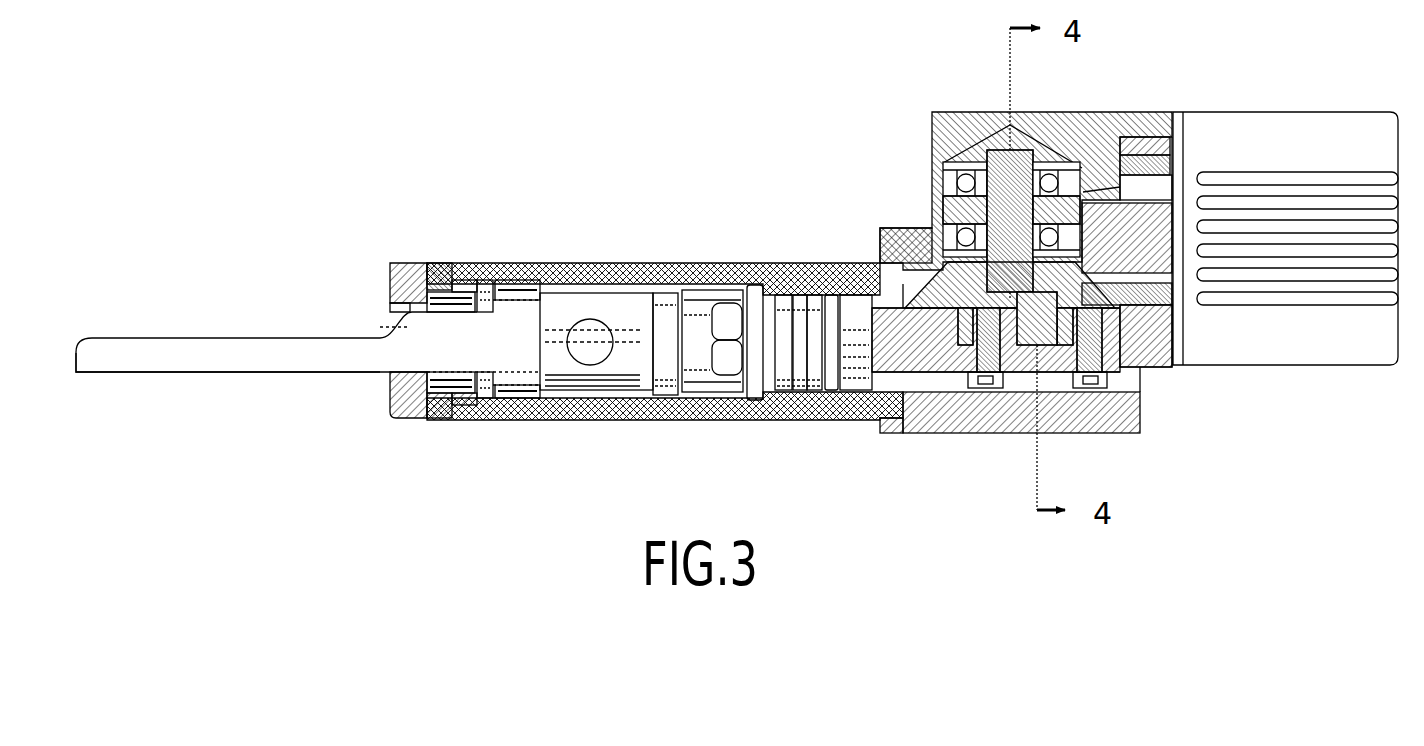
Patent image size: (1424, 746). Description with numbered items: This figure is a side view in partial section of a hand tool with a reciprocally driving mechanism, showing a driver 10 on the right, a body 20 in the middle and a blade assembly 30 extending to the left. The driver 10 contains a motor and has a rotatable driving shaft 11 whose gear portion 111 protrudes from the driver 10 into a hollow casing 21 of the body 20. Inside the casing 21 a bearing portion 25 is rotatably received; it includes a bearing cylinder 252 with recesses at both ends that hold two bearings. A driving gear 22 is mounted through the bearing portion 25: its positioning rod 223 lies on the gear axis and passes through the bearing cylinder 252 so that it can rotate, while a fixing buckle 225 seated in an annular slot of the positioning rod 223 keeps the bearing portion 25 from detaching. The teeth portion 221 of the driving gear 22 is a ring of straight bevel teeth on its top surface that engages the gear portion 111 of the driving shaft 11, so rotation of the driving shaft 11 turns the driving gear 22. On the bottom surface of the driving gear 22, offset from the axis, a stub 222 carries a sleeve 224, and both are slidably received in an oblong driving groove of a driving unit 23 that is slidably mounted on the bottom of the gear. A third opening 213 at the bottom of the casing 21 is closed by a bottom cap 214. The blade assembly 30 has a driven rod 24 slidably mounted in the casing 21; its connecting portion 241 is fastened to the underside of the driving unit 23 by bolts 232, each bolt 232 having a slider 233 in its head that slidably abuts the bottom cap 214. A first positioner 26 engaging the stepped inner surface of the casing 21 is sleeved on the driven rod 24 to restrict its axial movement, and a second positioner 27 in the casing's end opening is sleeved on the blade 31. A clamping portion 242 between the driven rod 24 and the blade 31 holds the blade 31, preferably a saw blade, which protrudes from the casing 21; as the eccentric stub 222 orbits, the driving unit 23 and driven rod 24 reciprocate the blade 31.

The driver 10 is at (1317, 128).
The driving shaft 11 is at (1163, 215).
The gear portion 111 is at (1150, 290).
The body 20 is at (820, 186).
The casing 21 is at (1148, 123).
The driving gear 22 is at (913, 285).
The teeth portion 221 is at (935, 278).
The stub 222 is at (1017, 300).
The positioning rod 223 is at (1018, 172).
The sleeve 224 is at (1013, 340).
The fixing buckle 225 is at (1036, 162).
The driving unit 23 is at (1110, 340).
The bolts 232 is at (1097, 353).
The slider 233 is at (1085, 390).
The driven rod 24 is at (697, 365).
The connecting portion 241 is at (957, 355).
The clamping portion 242 is at (539, 348).
The bearing portion 25 is at (963, 170).
The bearing cylinder 252 is at (952, 185).
The first positioner 26 is at (787, 300).
The second positioner 27 is at (400, 420).
The blade assembly 30 is at (175, 335).
The blade 31 is at (258, 352).
The third opening 213 is at (1112, 413).
The bottom cap 214 is at (905, 418).